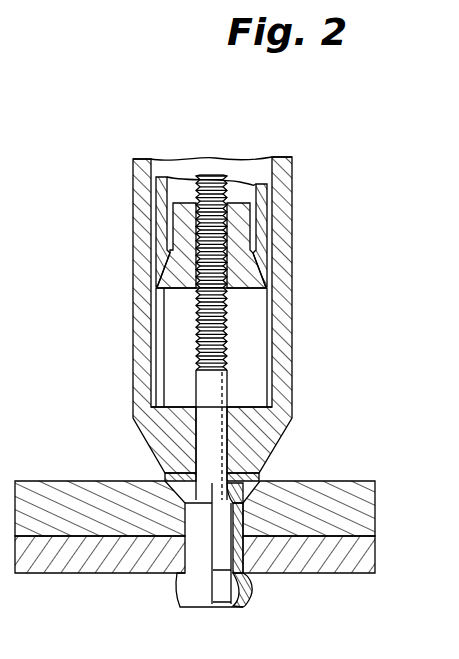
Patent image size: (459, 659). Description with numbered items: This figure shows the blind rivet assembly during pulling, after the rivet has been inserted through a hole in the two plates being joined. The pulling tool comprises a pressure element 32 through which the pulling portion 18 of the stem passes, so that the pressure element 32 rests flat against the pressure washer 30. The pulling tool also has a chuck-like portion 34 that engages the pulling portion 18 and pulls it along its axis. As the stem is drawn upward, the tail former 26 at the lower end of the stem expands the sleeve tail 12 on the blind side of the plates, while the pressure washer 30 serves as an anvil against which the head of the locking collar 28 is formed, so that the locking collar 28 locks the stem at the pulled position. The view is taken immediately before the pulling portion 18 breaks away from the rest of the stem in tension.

The expandable sleeve tail 12 is at (184, 594).
The pulling portion 18 is at (226, 323).
The tail former 26 is at (219, 593).
The locking collar 28 is at (233, 487).
The pressure washer 30 is at (257, 479).
The pressure element 32 is at (138, 410).
The chuck-like portion 34 is at (170, 228).